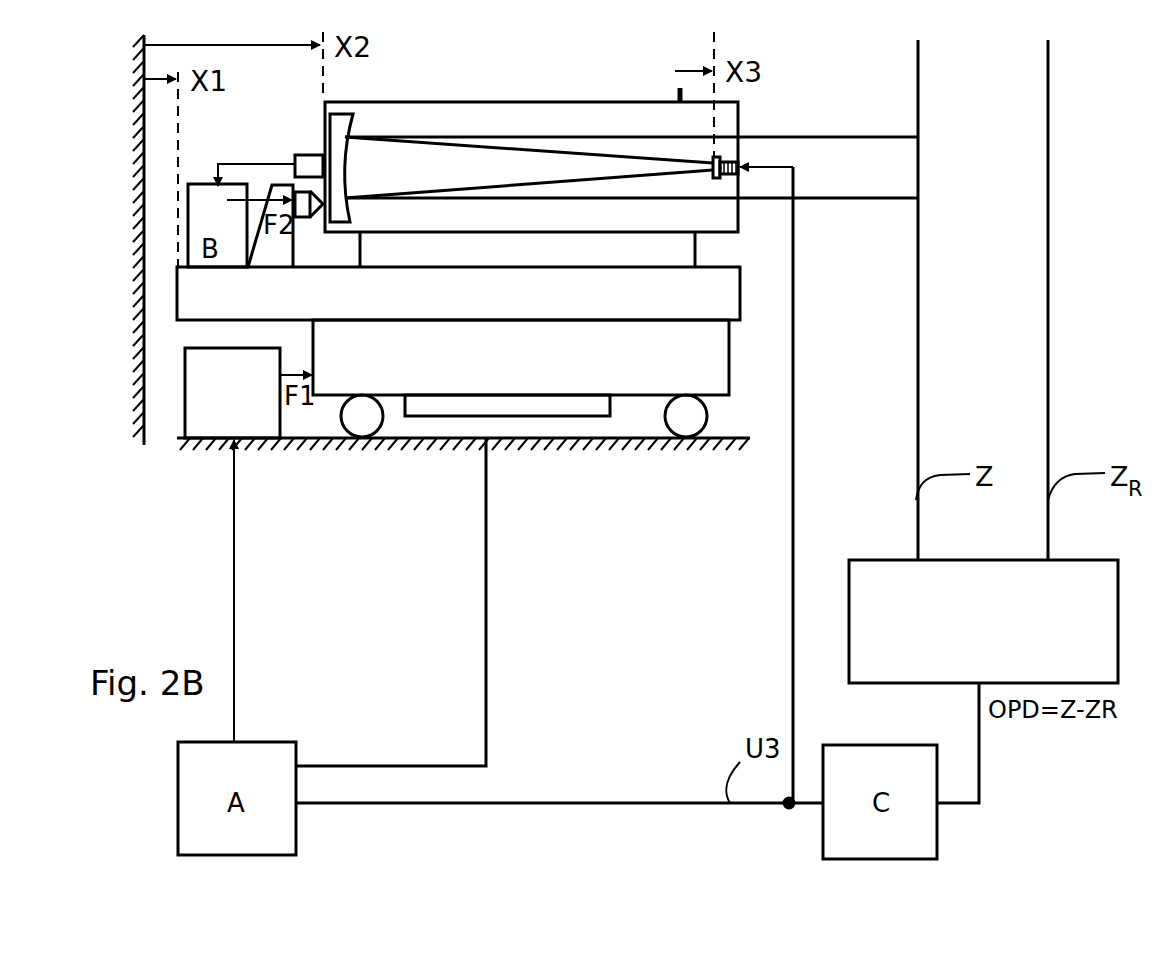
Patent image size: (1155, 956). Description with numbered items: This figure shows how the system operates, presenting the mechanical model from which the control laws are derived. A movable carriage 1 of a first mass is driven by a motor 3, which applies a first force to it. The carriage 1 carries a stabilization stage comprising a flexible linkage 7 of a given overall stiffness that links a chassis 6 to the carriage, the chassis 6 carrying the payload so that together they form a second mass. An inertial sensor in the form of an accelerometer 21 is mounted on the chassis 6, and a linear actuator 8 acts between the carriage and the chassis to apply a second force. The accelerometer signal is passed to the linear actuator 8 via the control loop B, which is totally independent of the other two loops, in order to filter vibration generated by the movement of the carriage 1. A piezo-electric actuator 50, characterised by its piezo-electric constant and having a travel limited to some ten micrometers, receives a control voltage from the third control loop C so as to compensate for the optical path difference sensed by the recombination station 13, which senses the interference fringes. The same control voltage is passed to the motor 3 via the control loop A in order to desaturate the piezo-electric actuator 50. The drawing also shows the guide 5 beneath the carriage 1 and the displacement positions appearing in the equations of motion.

The carriage 1 is at (730, 360).
The motor 3 is at (232, 393).
The bearing guide 5 is at (557, 418).
The chassis 6 is at (462, 102).
The flexible linkage 7 is at (372, 250).
The linear actuator 8 is at (303, 218).
The recombination station 13 is at (983, 621).
The accelerometer 21 is at (303, 155).
The piezo-electric actuator 50 is at (735, 157).